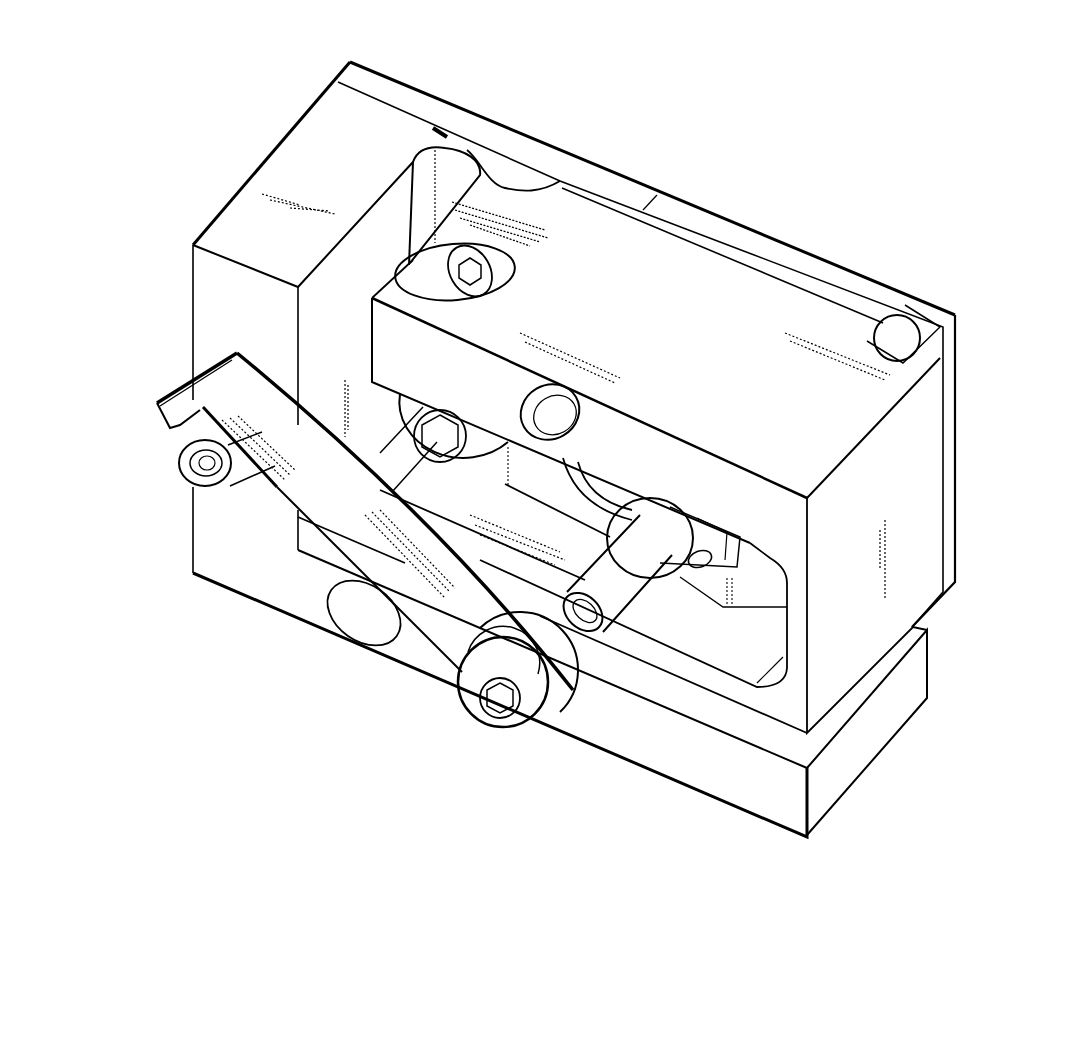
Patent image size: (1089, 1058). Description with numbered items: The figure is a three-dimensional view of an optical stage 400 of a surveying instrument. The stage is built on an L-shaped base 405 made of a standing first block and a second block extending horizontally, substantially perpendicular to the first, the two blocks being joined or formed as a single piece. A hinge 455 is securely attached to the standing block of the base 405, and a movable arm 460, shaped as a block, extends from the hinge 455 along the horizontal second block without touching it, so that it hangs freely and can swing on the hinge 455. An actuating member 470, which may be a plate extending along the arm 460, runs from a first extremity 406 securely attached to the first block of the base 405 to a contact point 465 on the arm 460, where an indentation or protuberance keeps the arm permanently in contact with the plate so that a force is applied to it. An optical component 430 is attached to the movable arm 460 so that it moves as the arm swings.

The optical stage 400 is at (808, 178).
The base 405 is at (630, 762).
The first extremity 406 is at (193, 323).
The optical component 430 is at (605, 572).
The hinge 455 is at (427, 157).
The movable arm 460 is at (928, 608).
The contact point 465 is at (958, 314).
The actuating member 470 is at (905, 320).